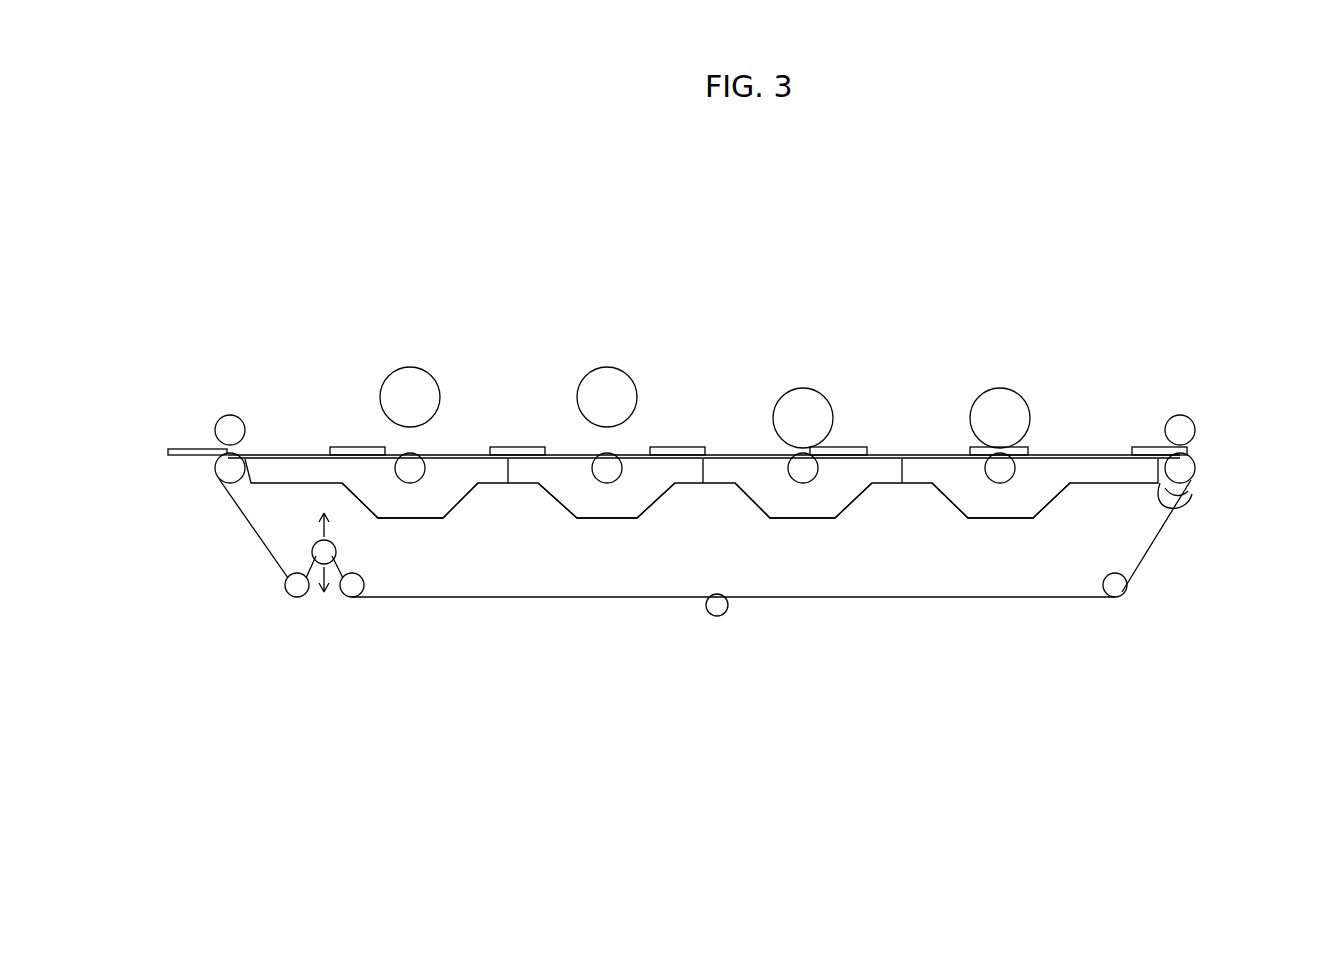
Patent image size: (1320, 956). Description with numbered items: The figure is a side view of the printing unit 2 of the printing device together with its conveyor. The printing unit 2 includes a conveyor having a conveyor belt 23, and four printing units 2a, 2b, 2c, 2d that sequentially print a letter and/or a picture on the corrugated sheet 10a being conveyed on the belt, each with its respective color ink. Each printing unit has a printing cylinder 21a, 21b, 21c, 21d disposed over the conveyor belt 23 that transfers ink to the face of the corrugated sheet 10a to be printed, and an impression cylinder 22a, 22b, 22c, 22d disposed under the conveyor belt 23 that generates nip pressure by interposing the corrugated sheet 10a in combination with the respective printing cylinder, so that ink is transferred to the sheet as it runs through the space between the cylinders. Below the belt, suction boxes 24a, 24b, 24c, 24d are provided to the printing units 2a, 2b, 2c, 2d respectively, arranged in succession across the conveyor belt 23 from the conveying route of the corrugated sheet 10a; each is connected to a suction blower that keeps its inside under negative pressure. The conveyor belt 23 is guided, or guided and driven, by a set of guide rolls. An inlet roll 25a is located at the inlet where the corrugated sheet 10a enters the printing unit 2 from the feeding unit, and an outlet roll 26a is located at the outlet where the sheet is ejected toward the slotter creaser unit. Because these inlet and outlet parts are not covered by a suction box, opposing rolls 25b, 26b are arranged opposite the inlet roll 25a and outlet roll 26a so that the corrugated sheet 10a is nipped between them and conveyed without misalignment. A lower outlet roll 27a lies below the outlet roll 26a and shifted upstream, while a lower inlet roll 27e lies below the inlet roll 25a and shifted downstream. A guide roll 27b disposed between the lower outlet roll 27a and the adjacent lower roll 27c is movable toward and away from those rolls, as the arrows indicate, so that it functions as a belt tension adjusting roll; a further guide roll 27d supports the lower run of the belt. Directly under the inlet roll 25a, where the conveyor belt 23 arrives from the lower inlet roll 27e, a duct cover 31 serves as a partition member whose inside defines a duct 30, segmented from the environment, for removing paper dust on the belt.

The printing unit 2 is at (751, 317).
The printing unit 2a is at (1013, 366).
The printing unit 2b is at (815, 366).
The printing unit 2c is at (620, 348).
The printing unit 2d is at (423, 348).
The corrugated sheet 10a is at (1140, 446).
The printing cylinder 21a is at (1022, 411).
The printing cylinder 21b is at (826, 411).
The printing cylinder 21c is at (630, 390).
The printing cylinder 21d is at (433, 390).
The impression cylinder 22a is at (1000, 470).
The impression cylinder 22b is at (803, 470).
The impression cylinder 22c is at (607, 470).
The impression cylinder 22d is at (410, 470).
The conveyor belt 23 is at (1158, 553).
The suction box 24a is at (1045, 502).
The suction box 24b is at (849, 502).
The suction box 24c is at (652, 502).
The suction box 24d is at (450, 502).
The inlet roll 25a is at (1188, 470).
The opposing roll 25b is at (1190, 430).
The outlet roll 26a is at (228, 470).
The opposing roll 26b is at (229, 420).
The lower outlet roll 27a is at (297, 597).
The guide roll 27b is at (314, 552).
The lower roll 27c is at (352, 597).
The guide roll 27d is at (718, 616).
The lower inlet roll 27e is at (1118, 597).
The duct 30 is at (1183, 490).
The duct cover 31 is at (1172, 492).